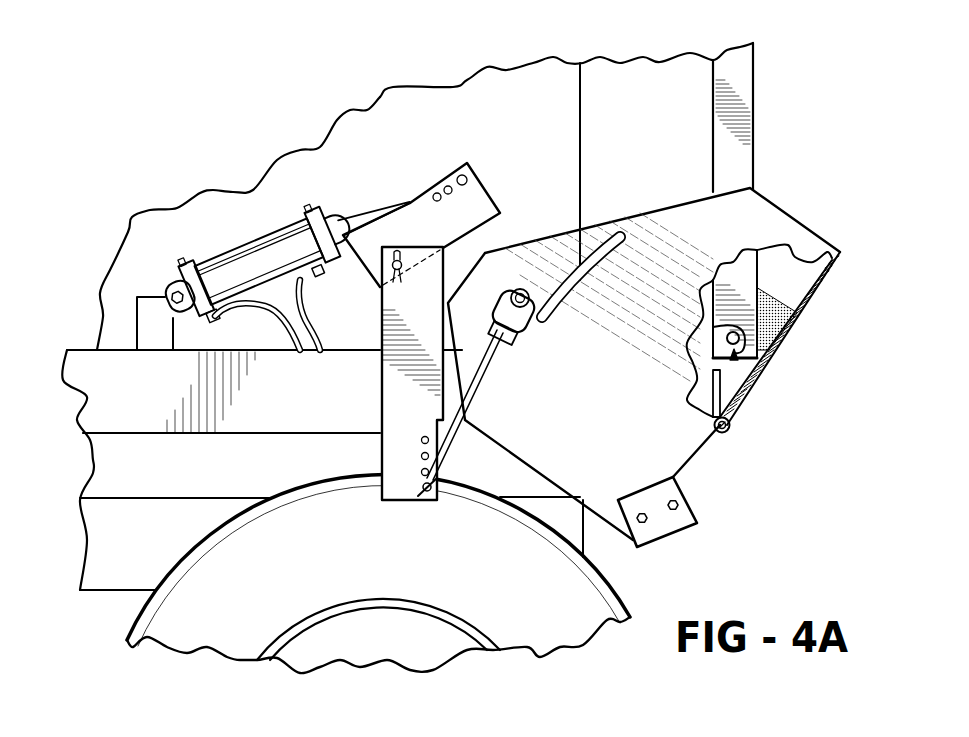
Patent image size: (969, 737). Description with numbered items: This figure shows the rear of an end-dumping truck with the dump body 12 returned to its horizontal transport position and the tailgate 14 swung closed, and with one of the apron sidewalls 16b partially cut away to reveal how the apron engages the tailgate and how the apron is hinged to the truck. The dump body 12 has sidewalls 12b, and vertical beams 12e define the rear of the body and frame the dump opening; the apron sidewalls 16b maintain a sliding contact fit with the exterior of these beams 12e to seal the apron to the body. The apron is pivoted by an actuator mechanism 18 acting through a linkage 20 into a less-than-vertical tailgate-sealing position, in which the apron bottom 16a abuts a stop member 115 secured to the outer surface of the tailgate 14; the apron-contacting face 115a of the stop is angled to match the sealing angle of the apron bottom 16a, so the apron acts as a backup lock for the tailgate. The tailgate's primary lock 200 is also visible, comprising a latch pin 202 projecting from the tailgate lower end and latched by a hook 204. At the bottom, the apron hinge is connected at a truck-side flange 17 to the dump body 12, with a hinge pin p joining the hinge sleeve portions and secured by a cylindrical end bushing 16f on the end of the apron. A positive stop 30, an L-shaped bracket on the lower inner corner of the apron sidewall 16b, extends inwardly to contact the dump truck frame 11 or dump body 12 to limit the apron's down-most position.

The dump truck frame 11 is at (110, 460).
The dump body 12 is at (300, 148).
The dump body sidewalls 12b is at (477, 123).
The vertical beams 12e is at (643, 90).
The tailgate 14 is at (757, 112).
The actuator mechanism 18 is at (253, 235).
The linkage 20 is at (403, 190).
The apron sidewalls 16b is at (690, 271).
The hooks 204 is at (725, 315).
The stop member 115 is at (778, 300).
The apron-contacting face 115a is at (778, 345).
The latch pin 202 is at (727, 335).
The apron bottom 16a is at (800, 310).
The primary lock 200 is at (745, 362).
The truck-side flange 17 is at (735, 393).
The cylindrical end bushing 16f is at (738, 432).
The hinge pin p is at (722, 435).
The positive stop 30 is at (660, 528).